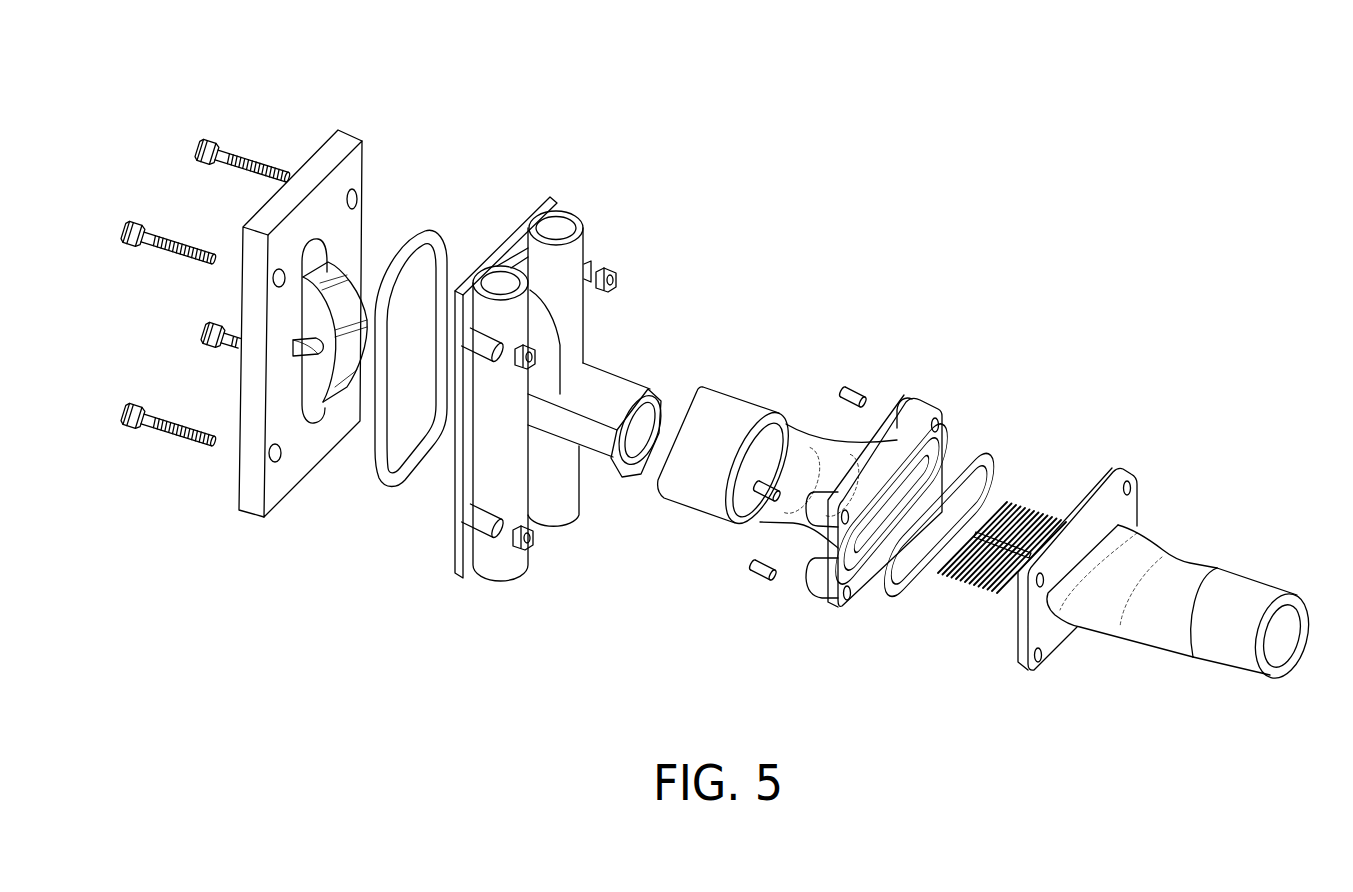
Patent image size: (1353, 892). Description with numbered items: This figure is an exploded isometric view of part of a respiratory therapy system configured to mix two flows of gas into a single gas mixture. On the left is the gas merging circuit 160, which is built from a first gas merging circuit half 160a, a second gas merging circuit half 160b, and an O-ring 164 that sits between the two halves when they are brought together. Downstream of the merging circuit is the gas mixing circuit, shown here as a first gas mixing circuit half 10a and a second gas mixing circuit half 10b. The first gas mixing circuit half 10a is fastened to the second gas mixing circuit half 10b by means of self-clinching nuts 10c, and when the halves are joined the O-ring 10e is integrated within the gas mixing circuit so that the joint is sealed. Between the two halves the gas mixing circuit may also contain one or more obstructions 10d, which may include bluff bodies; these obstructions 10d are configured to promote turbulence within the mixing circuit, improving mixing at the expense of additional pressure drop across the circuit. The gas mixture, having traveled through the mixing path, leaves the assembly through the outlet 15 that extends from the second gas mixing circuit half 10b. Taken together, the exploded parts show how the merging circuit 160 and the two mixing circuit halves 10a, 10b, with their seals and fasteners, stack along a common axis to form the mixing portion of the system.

The gas merging circuit 160 is at (356, 128).
The first gas merging circuit half 160a is at (246, 514).
The second gas merging circuit half 160b is at (455, 578).
The O-ring 164 is at (432, 222).
The first gas mixing circuit half 10a is at (831, 609).
The second gas mixing circuit half 10b is at (1130, 470).
The nuts 10c is at (852, 386).
The obstructions 10d is at (970, 598).
The O-ring 10e is at (982, 450).
The outlet 15 is at (1157, 649).